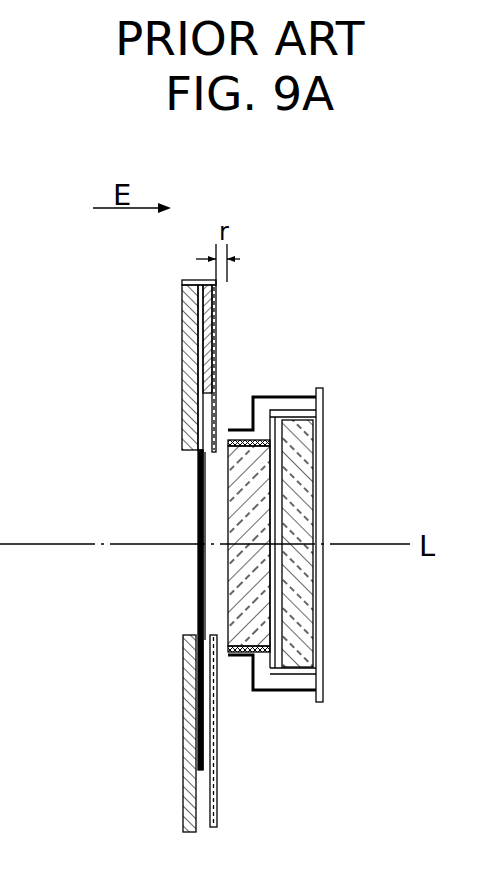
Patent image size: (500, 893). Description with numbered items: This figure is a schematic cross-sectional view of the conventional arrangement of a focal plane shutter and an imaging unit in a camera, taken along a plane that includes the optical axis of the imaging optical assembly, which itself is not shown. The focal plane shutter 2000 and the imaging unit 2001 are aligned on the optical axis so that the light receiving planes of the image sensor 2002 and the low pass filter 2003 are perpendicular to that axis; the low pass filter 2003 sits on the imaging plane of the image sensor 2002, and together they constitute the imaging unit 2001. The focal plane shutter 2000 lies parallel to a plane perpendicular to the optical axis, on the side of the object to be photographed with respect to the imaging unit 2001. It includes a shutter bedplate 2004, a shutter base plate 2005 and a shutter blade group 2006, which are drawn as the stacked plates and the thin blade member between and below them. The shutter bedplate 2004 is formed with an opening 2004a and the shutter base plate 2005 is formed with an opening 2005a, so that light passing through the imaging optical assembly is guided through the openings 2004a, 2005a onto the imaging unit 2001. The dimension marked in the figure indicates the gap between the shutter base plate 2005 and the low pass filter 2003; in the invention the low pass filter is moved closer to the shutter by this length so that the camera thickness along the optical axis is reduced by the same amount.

The focal plane shutter 2000 is at (190, 534).
The imaging unit 2001 is at (366, 385).
The image sensor 2002 is at (302, 410).
The low pass filter 2003 is at (245, 638).
The shutter bedplate 2004 is at (183, 333).
The opening of shutter bedplate 2004a is at (191, 474).
The shutter base plate 2005 is at (218, 304).
The opening of shutter base plate 2005a is at (212, 486).
The shutter blade group 2006 is at (199, 605).